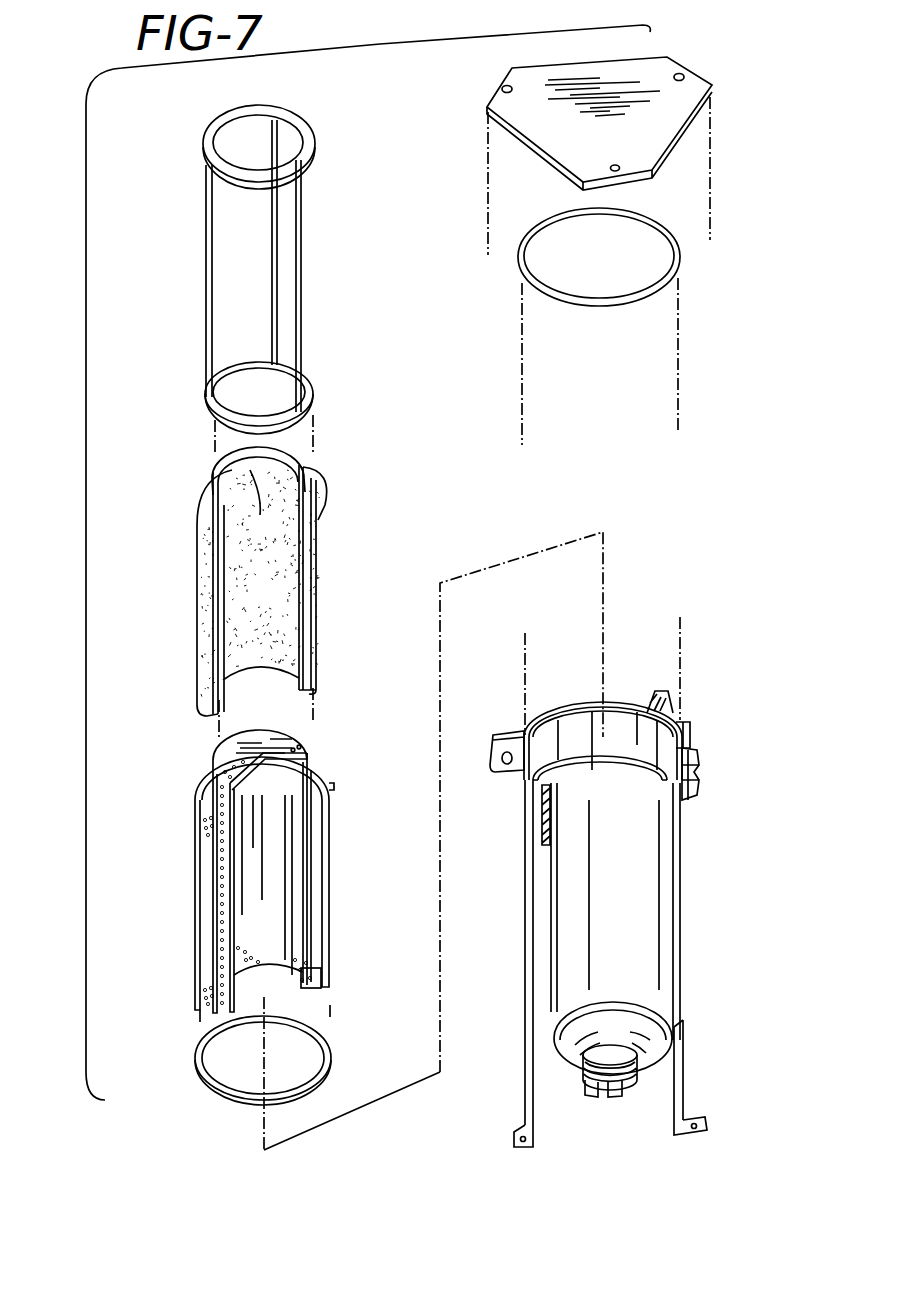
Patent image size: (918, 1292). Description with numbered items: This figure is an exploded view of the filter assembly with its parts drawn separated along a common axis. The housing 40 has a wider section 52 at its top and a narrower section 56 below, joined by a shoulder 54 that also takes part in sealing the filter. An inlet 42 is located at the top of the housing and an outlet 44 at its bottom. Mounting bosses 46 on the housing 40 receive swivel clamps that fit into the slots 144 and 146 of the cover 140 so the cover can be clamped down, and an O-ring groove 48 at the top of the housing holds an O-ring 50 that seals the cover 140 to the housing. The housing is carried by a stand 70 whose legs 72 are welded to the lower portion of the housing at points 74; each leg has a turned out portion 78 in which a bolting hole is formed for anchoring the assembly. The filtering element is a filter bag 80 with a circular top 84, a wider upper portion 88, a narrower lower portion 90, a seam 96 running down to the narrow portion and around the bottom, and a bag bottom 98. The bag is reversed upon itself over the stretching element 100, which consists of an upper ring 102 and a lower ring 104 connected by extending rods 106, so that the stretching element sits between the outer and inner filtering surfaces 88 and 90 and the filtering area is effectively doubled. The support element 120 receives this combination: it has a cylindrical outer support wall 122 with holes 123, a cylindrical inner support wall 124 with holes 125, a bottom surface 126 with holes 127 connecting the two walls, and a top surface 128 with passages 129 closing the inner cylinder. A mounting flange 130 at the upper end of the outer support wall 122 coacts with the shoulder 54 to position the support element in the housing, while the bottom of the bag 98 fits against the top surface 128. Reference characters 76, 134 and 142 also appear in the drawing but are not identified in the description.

The housing 40 is at (601, 888).
The inlet 42 is at (700, 792).
The outlet 44 is at (607, 1063).
The mounting bosses 46 is at (508, 733).
The O-ring groove 48 is at (688, 728).
The O-ring 50 is at (680, 256).
The wider section 52 is at (573, 728).
The shoulder 54 is at (640, 782).
The narrower section 56 is at (640, 892).
The stand 70 is at (526, 1050).
The legs 72 is at (673, 1108).
The welding points 74 is at (683, 1042).
The bracket feet 76 is at (522, 1136).
The turned out portion 78 is at (512, 1143).
The filter bag 80 is at (264, 557).
The circular top 84 is at (322, 481).
The wider upper portion 88 is at (207, 613).
The narrower lower portion 90 is at (230, 614).
The seam 96 is at (269, 506).
The bottom of the bag 98 is at (235, 455).
The stretching element 100 is at (263, 252).
The upper ring 102 is at (302, 122).
The lower ring 104 is at (318, 385).
The extending rods 106 is at (298, 320).
The support element 120 is at (269, 856).
The outer support wall 122 is at (322, 866).
The holes or passages 123 is at (208, 840).
The inner support wall 124 is at (312, 906).
The holes or passages 125 is at (245, 958).
The bottom surface 126 is at (320, 990).
The holes or passages 127 is at (310, 968).
The top surface 128 is at (272, 738).
The passages 129 is at (297, 750).
The mounting flange 130 is at (334, 780).
The bottom ring 134 is at (205, 1068).
The cover 140 is at (579, 105).
The plate hole 142 is at (575, 152).
The slot 144 is at (500, 90).
The slot 146 is at (686, 72).